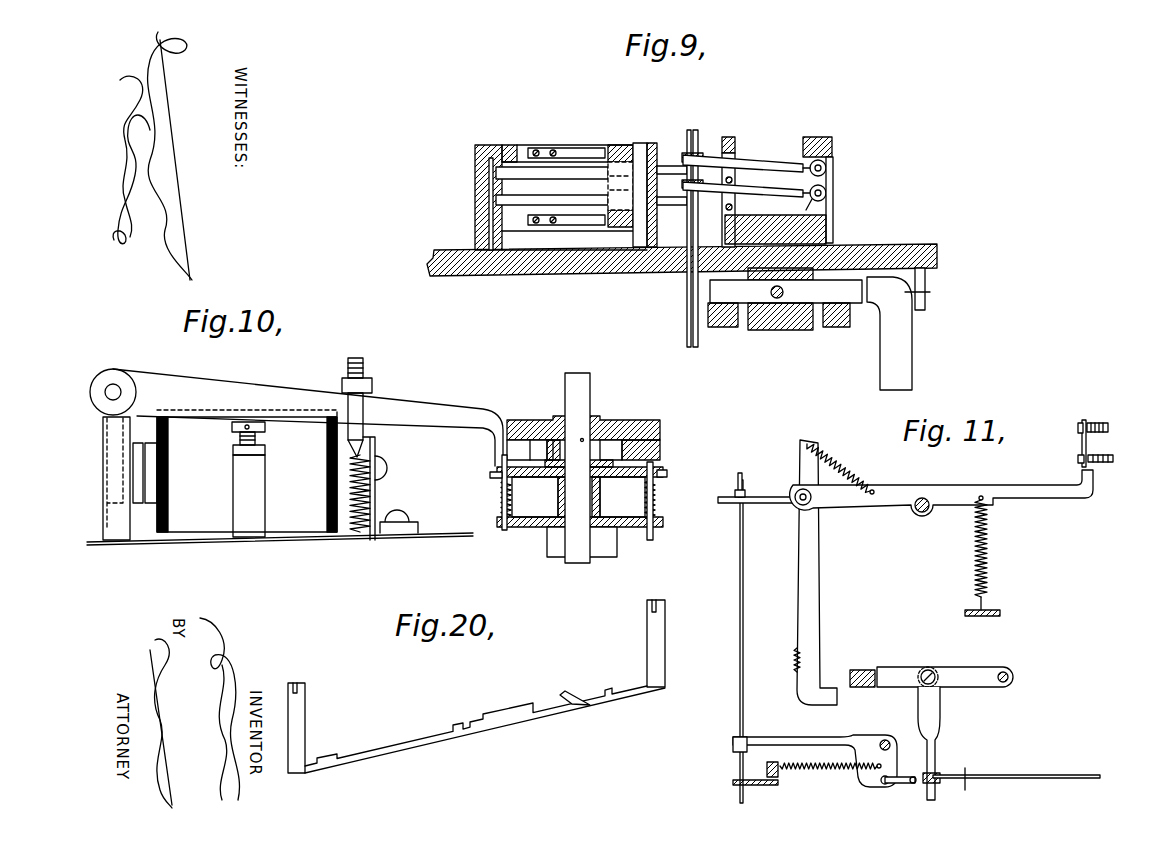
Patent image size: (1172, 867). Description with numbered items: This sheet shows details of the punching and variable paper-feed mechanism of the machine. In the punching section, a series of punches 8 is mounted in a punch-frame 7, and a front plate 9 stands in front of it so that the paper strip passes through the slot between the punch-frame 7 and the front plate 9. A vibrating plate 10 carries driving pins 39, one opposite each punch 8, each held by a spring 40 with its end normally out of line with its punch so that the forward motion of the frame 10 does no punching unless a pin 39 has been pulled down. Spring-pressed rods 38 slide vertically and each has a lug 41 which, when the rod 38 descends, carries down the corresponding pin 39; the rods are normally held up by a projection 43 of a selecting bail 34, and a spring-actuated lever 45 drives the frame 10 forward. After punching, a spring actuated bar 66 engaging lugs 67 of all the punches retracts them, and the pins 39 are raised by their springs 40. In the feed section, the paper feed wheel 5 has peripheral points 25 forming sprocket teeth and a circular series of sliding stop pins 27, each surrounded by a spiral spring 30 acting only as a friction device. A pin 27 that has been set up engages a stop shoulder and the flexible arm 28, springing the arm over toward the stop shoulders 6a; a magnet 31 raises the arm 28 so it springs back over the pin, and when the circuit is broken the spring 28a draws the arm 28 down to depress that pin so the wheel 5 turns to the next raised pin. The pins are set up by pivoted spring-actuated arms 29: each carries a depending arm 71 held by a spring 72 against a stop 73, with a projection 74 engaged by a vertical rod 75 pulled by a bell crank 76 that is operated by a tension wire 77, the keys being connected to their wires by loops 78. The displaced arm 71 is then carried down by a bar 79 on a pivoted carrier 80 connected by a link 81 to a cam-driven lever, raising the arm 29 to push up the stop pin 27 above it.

In FIG. 10, the paper feed wheel 5 is at (545, 442).
In FIG. 11, the paper feed wheel 5 is at (1105, 426).
In FIG. 10, the stop shoulders 6a is at (507, 438).
In FIG. 9, the punch-frame 7 is at (660, 150).
In FIG. 9, the punches 8 is at (552, 186).
In FIG. 9, the front plate 9 is at (478, 212).
In FIG. 9, the vibrating plate 10 is at (834, 226).
In FIG. 10, the points 25 is at (489, 476).
In FIG. 10, the sliding stop pins 27 is at (504, 532).
In FIG. 11, the sliding stop pins 27 is at (1084, 420).
In FIG. 10, the arm 28 is at (296, 418).
In FIG. 10, the spring 28a is at (356, 520).
In FIG. 11, the arms 29 is at (1083, 500).
In FIG. 10, the spiral spring 30 is at (501, 503).
In FIG. 10, the magnet 31 is at (247, 477).
In FIG. 20, the bails 34 is at (296, 734).
In FIG. 9, the spring-pressed rods 38 is at (688, 318).
In FIG. 9, the driving pins 39 is at (760, 190).
In FIG. 9, the spring 40 is at (828, 193).
In FIG. 9, the lug 41 is at (706, 160).
In FIG. 20, the projection 43 is at (576, 690).
In FIG. 9, the spring-actuated lever 45 is at (912, 352).
In FIG. 9, the spring actuated bar 66 is at (616, 146).
In FIG. 10, the spring actuated bar 66 is at (533, 440).
In FIG. 9, the lugs 67 is at (641, 146).
In FIG. 11, the depending arms 71 is at (820, 597).
In FIG. 11, the springs 72 is at (851, 472).
In FIG. 11, the stop 73 is at (781, 651).
In FIG. 11, the projections 74 is at (776, 504).
In FIG. 11, the vertical rods 75 is at (740, 638).
In FIG. 11, the bell cranks 76 is at (860, 736).
In FIG. 11, the tension wires 77 is at (1026, 774).
In FIG. 11, the loop 78 is at (967, 785).
In FIG. 11, the bar 79 is at (863, 670).
In FIG. 11, the pivoted carrier 80 is at (952, 667).
In FIG. 11, the link 81 is at (936, 716).